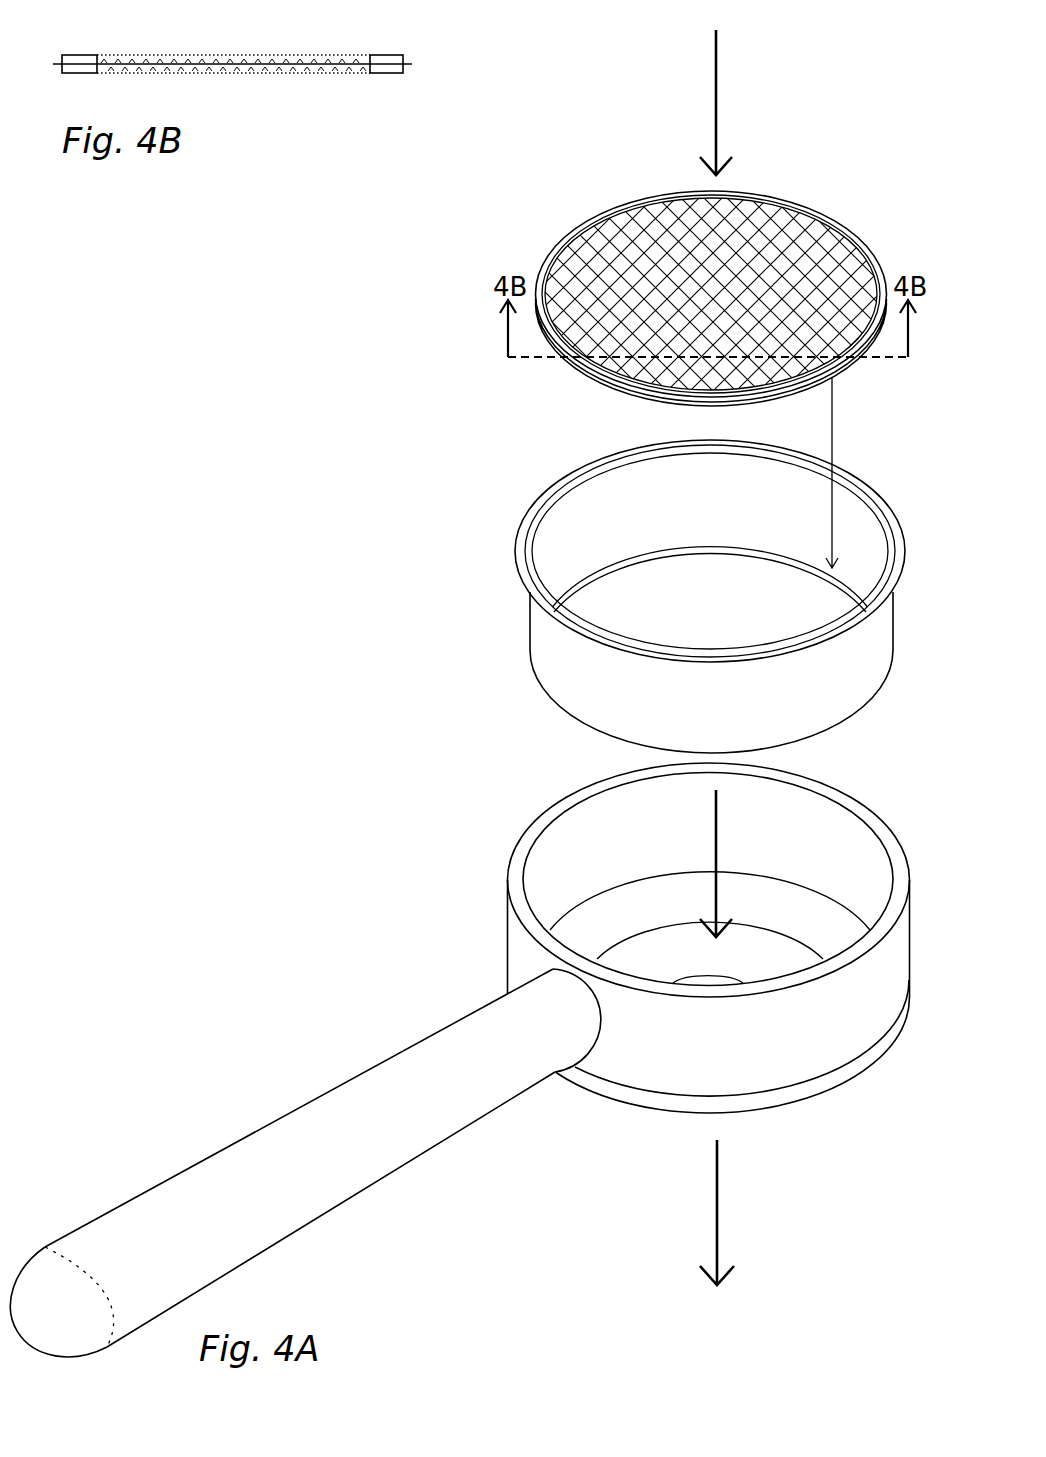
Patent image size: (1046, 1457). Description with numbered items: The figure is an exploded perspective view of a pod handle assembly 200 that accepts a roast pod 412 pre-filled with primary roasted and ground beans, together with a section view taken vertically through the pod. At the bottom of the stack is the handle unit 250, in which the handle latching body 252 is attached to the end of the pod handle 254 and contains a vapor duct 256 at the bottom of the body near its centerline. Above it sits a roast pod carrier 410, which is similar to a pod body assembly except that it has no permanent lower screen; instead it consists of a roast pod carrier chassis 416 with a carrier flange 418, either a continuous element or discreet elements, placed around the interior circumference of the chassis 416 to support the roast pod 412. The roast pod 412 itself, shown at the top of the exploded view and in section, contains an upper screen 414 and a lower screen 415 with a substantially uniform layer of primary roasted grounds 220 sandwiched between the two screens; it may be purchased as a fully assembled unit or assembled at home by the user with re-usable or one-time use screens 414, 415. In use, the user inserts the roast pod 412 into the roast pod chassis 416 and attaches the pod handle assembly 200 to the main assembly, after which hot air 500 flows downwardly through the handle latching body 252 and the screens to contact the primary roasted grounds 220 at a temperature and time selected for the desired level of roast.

In FIG. 4A, the pod handle assembly 200 is at (388, 650).
In FIG. 4B, the primary roasted grounds 220 is at (197, 63).
In FIG. 4A, the portafilter 250 is at (402, 938).
In FIG. 4A, the handle latching body 252 is at (507, 925).
In FIG. 4A, the pod handle 254 is at (281, 1120).
In FIG. 4A, the vapor duct 256 is at (702, 973).
In FIG. 4A, the roast pod carrier 410 is at (398, 450).
In FIG. 4A, the roast pod 412 is at (515, 218).
In FIG. 4A, the upper screen 414 is at (667, 262).
In FIG. 4B, the upper screen 414 is at (288, 55).
In FIG. 4B, the lower screen 415 is at (287, 73).
In FIG. 4A, the roast pod carrier chassis 416 is at (530, 642).
In FIG. 4A, the carrier flange 418 is at (612, 560).
In FIG. 4A, the hot air 500 is at (715, 113).